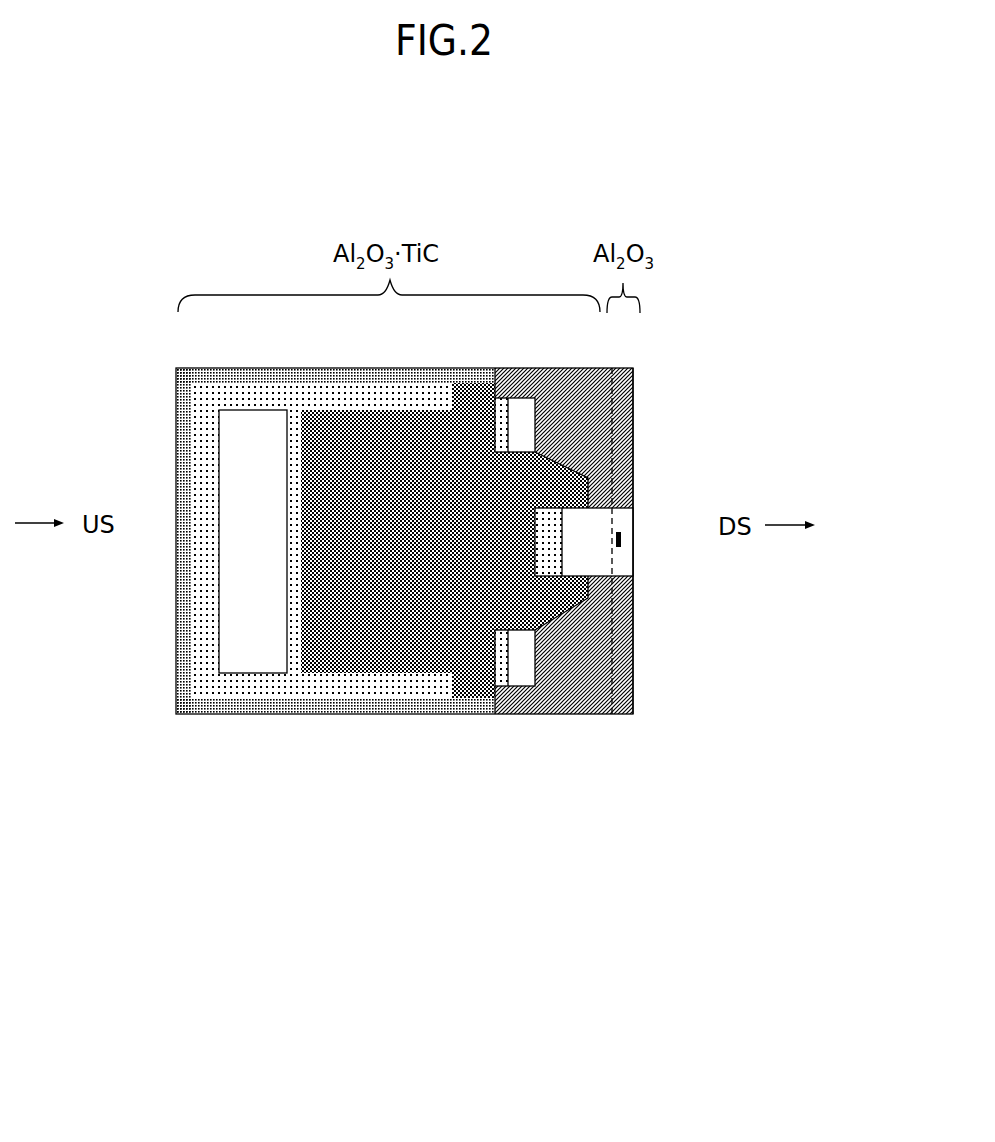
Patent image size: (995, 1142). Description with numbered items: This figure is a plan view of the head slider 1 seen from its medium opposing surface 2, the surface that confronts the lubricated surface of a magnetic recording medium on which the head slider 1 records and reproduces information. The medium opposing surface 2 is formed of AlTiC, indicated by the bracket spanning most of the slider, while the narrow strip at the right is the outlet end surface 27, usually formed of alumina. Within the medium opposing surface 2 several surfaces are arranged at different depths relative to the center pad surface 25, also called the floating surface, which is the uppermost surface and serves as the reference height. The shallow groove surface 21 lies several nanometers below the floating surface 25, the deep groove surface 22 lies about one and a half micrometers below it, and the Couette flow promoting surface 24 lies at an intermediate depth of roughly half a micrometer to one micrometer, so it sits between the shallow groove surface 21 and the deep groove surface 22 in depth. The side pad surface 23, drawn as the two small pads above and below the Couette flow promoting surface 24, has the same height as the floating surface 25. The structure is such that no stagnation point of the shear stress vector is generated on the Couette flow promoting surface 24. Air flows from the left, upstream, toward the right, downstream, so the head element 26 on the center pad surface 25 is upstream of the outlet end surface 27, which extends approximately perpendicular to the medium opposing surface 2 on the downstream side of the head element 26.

The head slider 1 is at (802, 145).
The medium opposing surface 2 is at (813, 880).
The shallow groove surface 21 is at (202, 672).
The deep groove surface 22 is at (374, 637).
The side pad surface 23 is at (522, 418).
The Couette flow promoting surface 24 is at (559, 714).
The center pad surface 25 is at (587, 553).
The head element 26 is at (622, 538).
The outlet end surface 27 is at (642, 429).